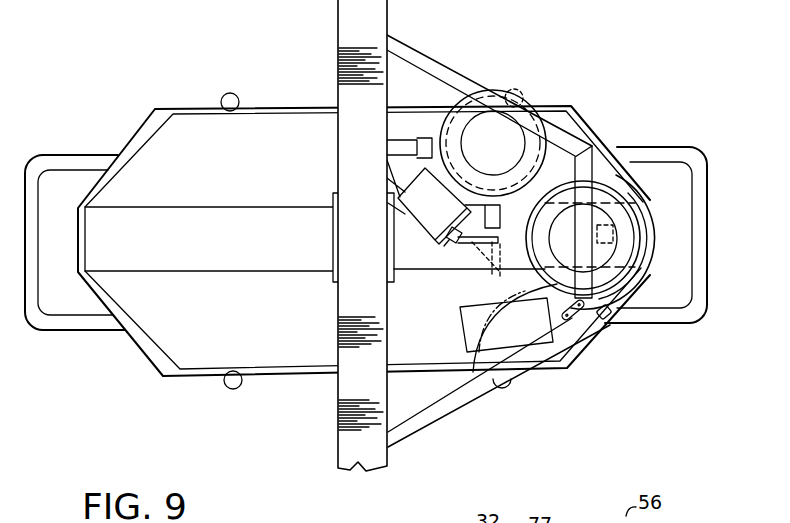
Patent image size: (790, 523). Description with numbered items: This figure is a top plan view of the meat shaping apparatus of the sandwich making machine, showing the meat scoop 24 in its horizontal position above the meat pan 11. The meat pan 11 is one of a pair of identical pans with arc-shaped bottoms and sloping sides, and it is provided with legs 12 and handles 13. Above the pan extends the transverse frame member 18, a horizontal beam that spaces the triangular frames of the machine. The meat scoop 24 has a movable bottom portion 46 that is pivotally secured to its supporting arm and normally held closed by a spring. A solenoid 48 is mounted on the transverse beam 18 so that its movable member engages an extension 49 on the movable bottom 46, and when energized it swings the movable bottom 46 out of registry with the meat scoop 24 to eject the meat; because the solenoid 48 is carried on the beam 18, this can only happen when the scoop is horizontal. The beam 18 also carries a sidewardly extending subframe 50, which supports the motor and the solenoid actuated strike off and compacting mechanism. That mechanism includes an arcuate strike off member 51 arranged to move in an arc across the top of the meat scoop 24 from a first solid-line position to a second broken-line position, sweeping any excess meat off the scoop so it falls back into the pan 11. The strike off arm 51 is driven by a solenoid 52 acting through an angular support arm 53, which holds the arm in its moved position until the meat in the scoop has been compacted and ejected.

The meat pan 11 is at (281, 330).
The legs 12 is at (224, 94).
The handles 13 is at (82, 323).
The transverse frame member 18 is at (338, 441).
The meat scoop 24 is at (595, 182).
The movable bottom portion 46 is at (508, 166).
The solenoid 48 is at (436, 218).
The extension 49 is at (455, 245).
The subframe 50 is at (442, 72).
The arcuate strike off member 51 is at (512, 287).
The solenoid 52 is at (522, 342).
The angular support arm 53 is at (590, 324).